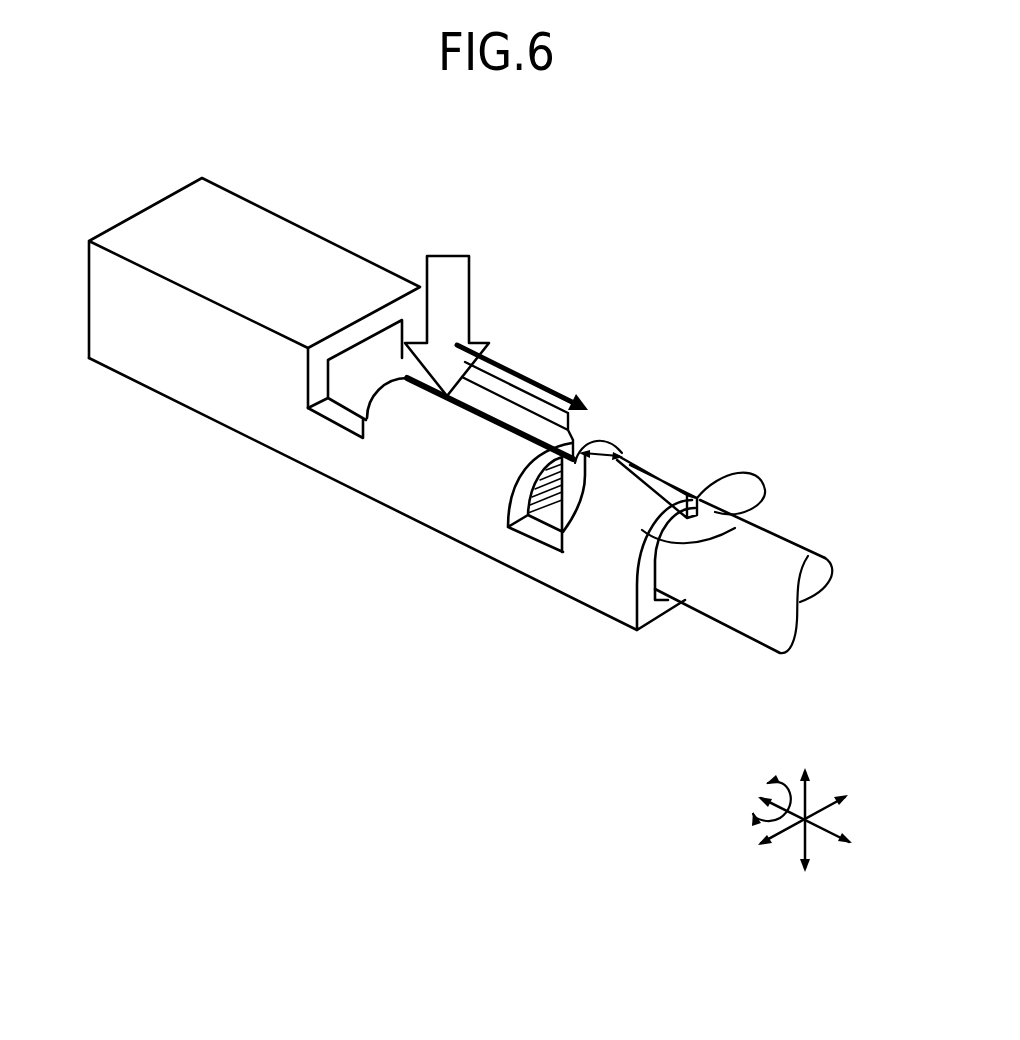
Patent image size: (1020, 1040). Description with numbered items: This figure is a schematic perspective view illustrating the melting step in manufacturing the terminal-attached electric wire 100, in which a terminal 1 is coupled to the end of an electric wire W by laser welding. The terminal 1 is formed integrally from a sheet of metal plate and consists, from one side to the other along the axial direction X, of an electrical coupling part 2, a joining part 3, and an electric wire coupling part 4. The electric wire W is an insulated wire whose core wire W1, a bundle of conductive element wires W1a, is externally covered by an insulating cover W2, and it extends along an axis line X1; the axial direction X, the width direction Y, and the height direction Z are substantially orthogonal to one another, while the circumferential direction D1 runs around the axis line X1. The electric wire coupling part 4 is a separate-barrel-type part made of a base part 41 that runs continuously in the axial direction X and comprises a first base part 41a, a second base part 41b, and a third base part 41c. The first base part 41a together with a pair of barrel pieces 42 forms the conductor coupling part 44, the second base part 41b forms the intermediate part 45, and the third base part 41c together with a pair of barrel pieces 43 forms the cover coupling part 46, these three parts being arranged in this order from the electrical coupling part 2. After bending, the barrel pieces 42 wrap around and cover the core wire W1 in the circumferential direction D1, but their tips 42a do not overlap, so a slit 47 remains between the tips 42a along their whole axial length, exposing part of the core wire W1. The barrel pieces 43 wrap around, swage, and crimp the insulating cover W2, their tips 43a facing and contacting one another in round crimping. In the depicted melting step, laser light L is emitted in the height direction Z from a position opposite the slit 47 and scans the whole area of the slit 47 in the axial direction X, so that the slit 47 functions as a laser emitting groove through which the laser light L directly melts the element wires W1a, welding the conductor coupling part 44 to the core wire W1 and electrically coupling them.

The terminal-attached electric wire 100 is at (355, 163).
The terminal 1 is at (404, 692).
The electrical coupling part 2 is at (185, 374).
The joining part 3 is at (326, 435).
The electric wire coupling part 4 is at (296, 588).
The base part 41 is at (673, 617).
The first base part 41a is at (400, 497).
The second base part 41b is at (532, 578).
The third base part 41c is at (636, 632).
The pair of barrel pieces 42 is at (399, 430).
The tips 42a is at (503, 418).
The pair of barrel pieces 43 is at (737, 498).
The tips 43a is at (640, 460).
The conductor coupling part 44 is at (429, 490).
The intermediate part 45 is at (527, 551).
The cover coupling part 46 is at (605, 584).
The slit 47 is at (506, 415).
The laser light L is at (447, 256).
The electric wire W is at (797, 290).
The core wire W1 is at (586, 446).
The insulating cover W2 is at (627, 460).
The element wires W1a is at (528, 430).
The axis line X1 is at (918, 663).
The axial direction X is at (832, 828).
The width direction Y is at (825, 797).
The height direction Z is at (805, 788).
The circumferential direction D1 is at (757, 815).